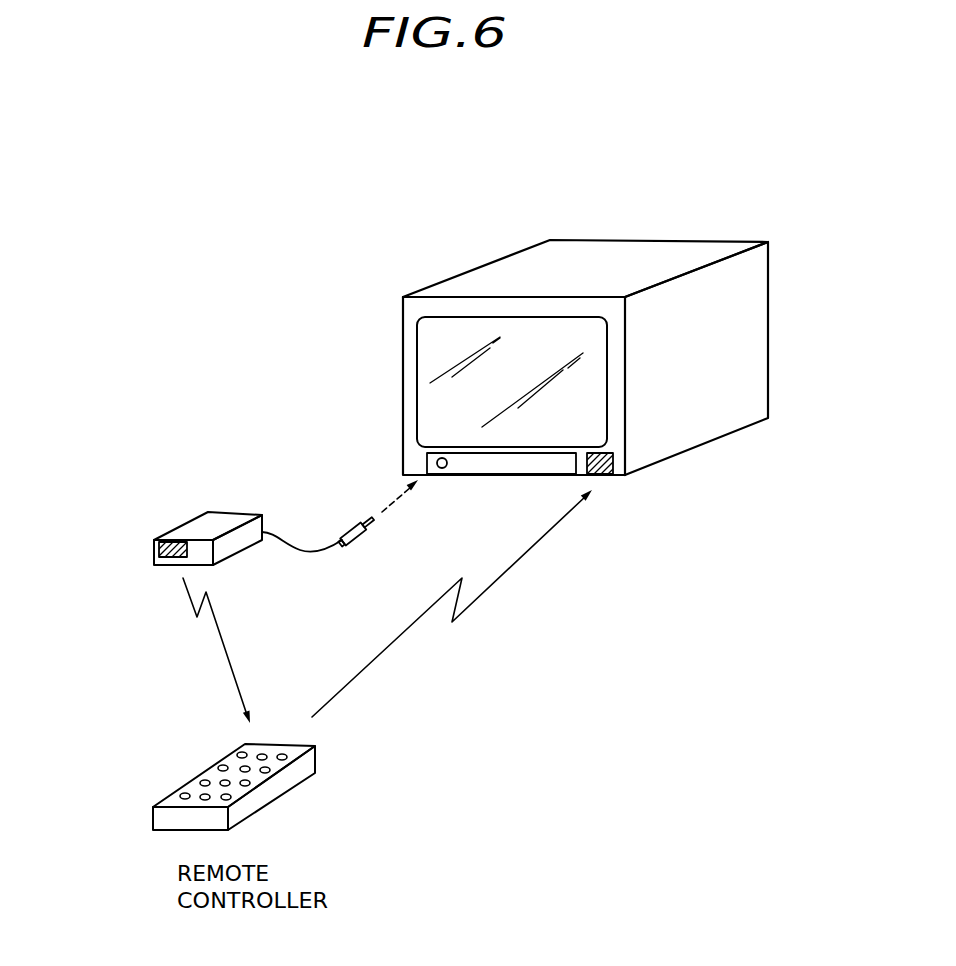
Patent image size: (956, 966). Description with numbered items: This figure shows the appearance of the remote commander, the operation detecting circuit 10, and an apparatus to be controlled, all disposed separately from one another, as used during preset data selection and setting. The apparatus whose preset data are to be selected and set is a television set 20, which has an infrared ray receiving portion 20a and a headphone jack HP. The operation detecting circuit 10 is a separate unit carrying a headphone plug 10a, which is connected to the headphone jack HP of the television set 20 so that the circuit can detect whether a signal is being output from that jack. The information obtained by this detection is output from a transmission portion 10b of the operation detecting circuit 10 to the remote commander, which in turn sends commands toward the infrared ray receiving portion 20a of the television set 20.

The operation detecting circuit 10 is at (173, 533).
The headphone plug 10a is at (346, 528).
The transmission portion 10b is at (155, 553).
The television set 20 is at (625, 253).
The infrared ray receiving portion 20a is at (605, 476).
The headphone jack HP is at (442, 468).